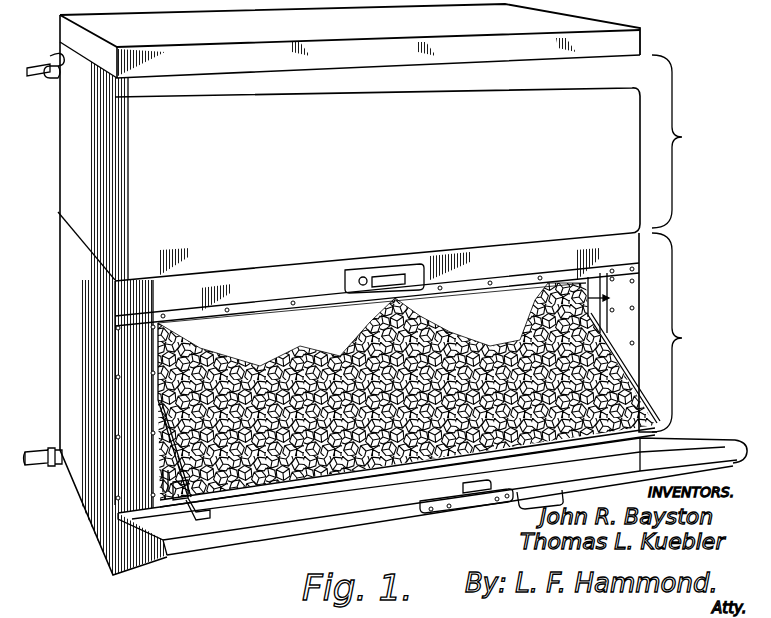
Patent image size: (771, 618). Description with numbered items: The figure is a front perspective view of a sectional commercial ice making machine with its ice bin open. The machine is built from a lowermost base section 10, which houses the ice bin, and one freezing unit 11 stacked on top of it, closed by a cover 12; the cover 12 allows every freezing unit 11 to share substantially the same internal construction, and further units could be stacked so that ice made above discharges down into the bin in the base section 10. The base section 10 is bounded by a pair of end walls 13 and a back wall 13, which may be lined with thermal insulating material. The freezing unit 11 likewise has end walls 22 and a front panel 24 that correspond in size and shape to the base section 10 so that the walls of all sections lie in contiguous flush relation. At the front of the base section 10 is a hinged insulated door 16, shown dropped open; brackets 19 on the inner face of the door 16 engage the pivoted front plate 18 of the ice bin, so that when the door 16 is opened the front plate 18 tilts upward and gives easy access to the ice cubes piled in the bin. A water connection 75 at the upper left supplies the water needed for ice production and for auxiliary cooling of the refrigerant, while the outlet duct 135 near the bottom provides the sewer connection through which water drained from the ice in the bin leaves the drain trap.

The base section 10 is at (692, 332).
The freezing unit 11 is at (690, 141).
The cover 12 is at (641, 41).
The end walls 13 is at (70, 365).
The insulated door 16 is at (375, 517).
The pivoted front plate 18 is at (166, 459).
The brackets 19 is at (182, 500).
The end walls 22 is at (70, 177).
The front panel 24 is at (430, 162).
The water connection 75 is at (50, 80).
The outlet duct 135 is at (50, 466).